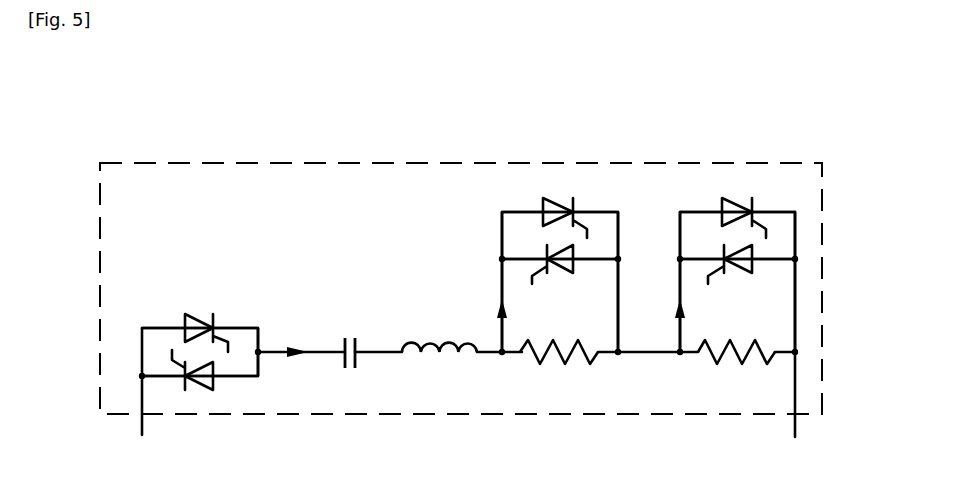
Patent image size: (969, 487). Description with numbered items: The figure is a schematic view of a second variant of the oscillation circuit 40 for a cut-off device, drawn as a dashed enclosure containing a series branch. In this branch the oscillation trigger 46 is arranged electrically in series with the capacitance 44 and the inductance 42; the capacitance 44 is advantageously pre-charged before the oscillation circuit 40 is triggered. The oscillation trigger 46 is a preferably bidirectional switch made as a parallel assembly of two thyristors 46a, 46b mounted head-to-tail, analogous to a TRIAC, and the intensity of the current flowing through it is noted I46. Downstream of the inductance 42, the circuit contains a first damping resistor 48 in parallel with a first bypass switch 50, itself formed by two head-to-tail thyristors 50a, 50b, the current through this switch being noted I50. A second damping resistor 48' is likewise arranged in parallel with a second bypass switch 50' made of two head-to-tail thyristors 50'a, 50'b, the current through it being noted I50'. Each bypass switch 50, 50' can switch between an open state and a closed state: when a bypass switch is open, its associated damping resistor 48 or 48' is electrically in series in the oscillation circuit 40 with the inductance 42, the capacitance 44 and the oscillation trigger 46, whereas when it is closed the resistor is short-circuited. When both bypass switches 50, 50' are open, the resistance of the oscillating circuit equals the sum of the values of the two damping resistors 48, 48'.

The oscillation circuit 40 is at (352, 163).
The inductance 42 is at (435, 341).
The capacitance 44 is at (356, 338).
The oscillation trigger 46 is at (191, 339).
The thyristor 46a is at (205, 307).
The thyristor 46b is at (201, 388).
The damping resistor 48 is at (559, 374).
The second damping resistor 48' is at (736, 374).
The bypass switch 50 is at (551, 221).
The thyristor 50a is at (548, 203).
The thyristor 50b is at (562, 273).
The second bypass switch 50' is at (765, 221).
The thyristor 50'a is at (699, 207).
The thyristor 50'b is at (803, 286).
The intensity of the current through the oscillation trigger I46 is at (305, 335).
The intensity of the current through the bypass switch I50 is at (523, 308).
The intensity of the current through the second bypass switch I50' is at (706, 308).